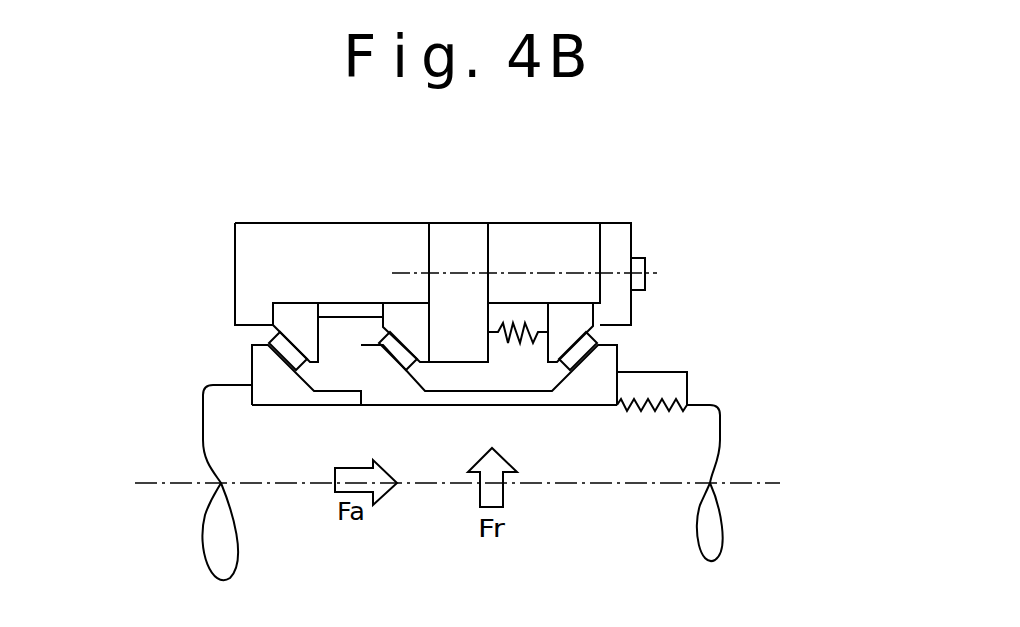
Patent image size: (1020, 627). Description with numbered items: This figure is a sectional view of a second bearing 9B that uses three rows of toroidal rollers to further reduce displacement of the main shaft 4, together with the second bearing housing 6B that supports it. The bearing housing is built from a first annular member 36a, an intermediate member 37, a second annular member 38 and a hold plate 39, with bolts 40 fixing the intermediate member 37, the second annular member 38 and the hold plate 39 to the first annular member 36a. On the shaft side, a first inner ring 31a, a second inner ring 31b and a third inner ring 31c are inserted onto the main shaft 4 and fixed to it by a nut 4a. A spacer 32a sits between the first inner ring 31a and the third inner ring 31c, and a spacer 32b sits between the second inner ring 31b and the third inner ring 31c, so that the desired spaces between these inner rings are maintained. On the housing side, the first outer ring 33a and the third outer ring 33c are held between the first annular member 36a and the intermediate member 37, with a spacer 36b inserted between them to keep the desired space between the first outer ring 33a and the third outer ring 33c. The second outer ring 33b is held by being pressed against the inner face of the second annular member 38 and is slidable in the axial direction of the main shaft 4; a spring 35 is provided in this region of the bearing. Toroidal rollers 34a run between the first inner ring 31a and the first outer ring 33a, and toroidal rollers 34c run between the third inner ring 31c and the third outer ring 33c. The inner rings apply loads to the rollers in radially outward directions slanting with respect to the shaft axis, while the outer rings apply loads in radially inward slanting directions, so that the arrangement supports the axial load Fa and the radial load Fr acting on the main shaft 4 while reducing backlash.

The main shaft 4 is at (208, 447).
The nut 4a is at (683, 390).
The second bearing housing 6B is at (641, 197).
The second bearing 9B is at (124, 347).
The first inner ring 31a is at (252, 378).
The second inner ring 31b is at (585, 398).
The third inner ring 31c is at (398, 405).
The spacer 32a is at (328, 404).
The spacer 32b is at (523, 405).
The first outer ring 33a is at (303, 313).
The second outer ring 33b is at (563, 313).
The third outer ring 33c is at (412, 312).
The toroidal rollers 34a is at (265, 343).
The toroidal rollers 34c is at (390, 349).
The spring 35 is at (527, 337).
The first annular member 36a is at (255, 223).
The spacer 36b is at (352, 312).
The intermediate member 37 is at (456, 223).
The second annular member 38 is at (563, 223).
The hold plate 39 is at (627, 242).
The bolts 40 is at (640, 282).